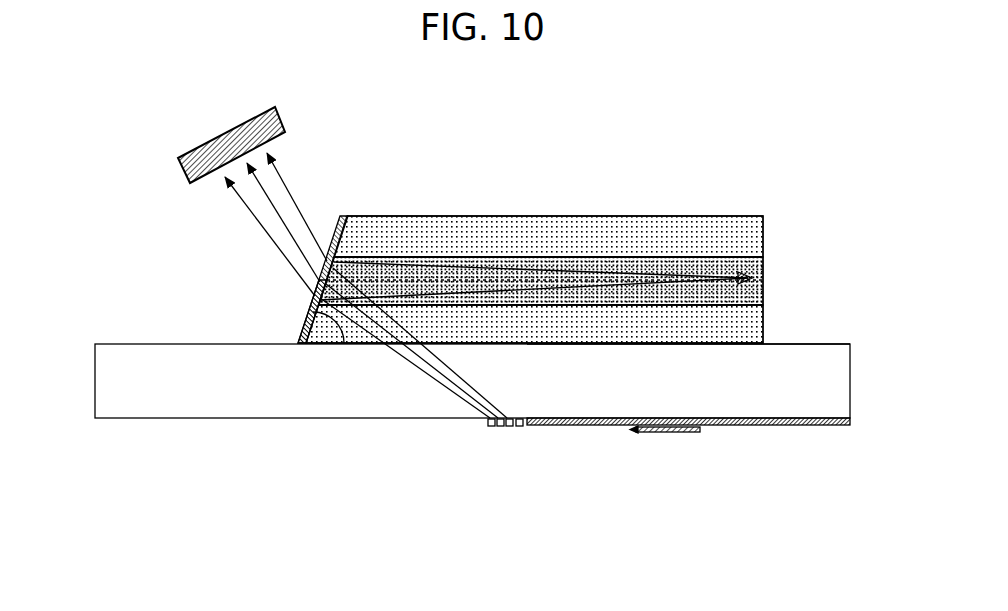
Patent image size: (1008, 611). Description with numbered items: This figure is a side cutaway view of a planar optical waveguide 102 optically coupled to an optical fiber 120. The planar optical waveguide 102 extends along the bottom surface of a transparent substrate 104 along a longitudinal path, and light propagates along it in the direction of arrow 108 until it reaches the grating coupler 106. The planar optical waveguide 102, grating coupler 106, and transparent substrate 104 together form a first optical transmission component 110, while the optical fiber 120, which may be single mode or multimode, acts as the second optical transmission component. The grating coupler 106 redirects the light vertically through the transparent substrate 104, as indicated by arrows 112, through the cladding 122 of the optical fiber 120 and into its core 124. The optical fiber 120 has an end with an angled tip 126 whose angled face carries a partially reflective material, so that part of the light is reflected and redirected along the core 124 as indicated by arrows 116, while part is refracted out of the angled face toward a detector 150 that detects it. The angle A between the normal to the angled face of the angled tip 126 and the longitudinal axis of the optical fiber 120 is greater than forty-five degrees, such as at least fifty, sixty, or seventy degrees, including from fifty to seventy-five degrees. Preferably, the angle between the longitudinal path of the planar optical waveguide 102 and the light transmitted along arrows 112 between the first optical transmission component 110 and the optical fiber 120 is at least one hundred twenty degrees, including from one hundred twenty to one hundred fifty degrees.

The detector 150 is at (217, 128).
The optical fiber 120 is at (683, 214).
The cladding 122 is at (461, 226).
The arrows indicating light redirected along the core 116 is at (537, 257).
The core 124 is at (586, 287).
The angled tip 126 is at (369, 227).
The angle A is at (320, 323).
The arrows indicating light transmitted 112 is at (418, 365).
The first optical transmission component 110 is at (182, 419).
The transparent substrate 104 is at (575, 387).
The grating coupler 106 is at (517, 432).
The planar optical waveguide 102 is at (790, 423).
The arrow indicating propagating light 108 is at (685, 442).